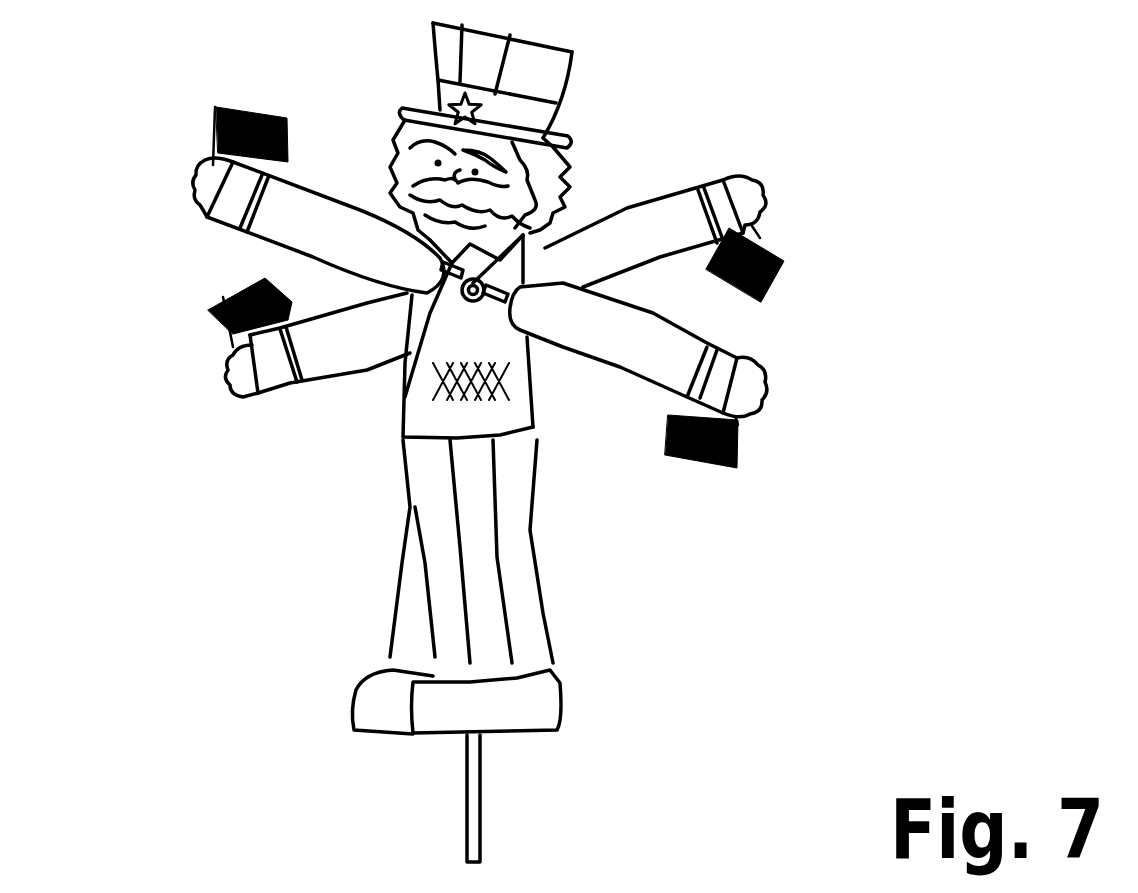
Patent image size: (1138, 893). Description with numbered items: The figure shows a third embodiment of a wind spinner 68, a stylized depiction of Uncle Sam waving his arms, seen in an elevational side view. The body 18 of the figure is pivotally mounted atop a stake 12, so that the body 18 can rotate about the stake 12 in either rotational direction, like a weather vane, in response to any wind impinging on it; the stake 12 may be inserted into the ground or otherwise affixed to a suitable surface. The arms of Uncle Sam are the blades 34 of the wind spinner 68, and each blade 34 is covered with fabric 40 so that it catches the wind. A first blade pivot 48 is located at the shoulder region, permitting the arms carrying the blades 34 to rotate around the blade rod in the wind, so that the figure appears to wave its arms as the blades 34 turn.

The wind spinner 68 is at (474, 442).
The blade 34 is at (193, 178).
The first blade pivot 48 is at (481, 284).
The fabric 40 is at (493, 380).
The body 18 is at (548, 637).
The stake 12 is at (477, 822).